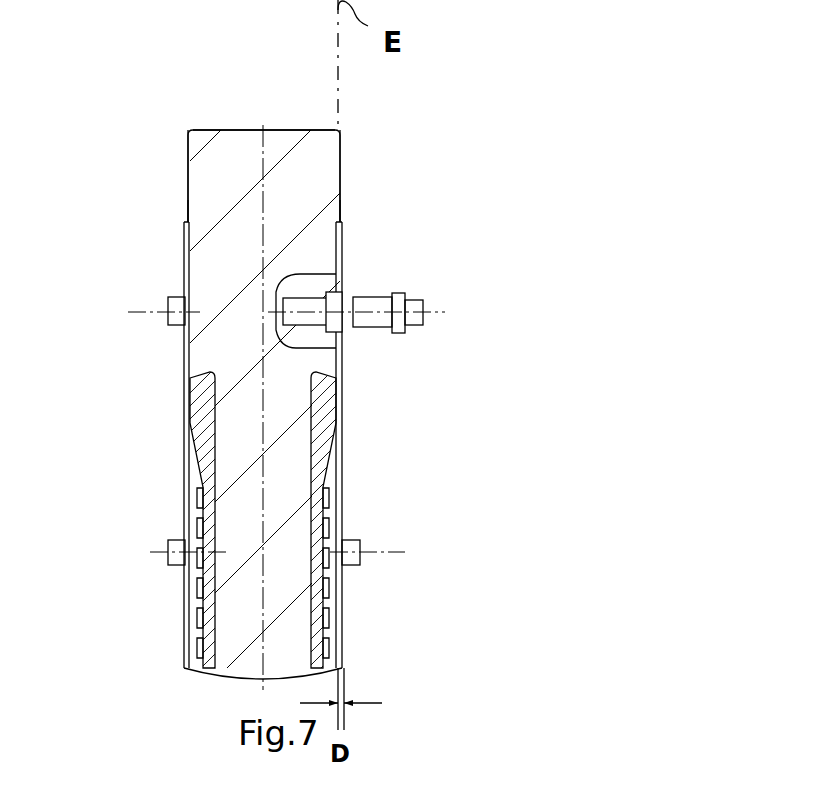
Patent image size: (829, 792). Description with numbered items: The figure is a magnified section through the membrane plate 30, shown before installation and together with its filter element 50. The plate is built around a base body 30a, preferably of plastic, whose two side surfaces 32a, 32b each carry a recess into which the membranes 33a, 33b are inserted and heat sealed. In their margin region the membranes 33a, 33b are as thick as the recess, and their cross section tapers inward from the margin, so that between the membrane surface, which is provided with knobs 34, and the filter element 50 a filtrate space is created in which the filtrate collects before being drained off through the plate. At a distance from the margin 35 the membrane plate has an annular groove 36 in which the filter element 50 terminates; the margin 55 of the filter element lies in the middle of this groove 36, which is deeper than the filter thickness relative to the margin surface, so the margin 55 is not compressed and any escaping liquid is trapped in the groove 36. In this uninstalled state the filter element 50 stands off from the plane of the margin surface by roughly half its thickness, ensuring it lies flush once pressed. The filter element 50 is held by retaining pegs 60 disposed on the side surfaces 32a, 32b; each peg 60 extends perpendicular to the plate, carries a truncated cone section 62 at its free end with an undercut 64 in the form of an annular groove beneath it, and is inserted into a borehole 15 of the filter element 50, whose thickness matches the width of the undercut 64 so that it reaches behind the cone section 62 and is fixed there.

The borehole 15 is at (308, 297).
The membrane plate 30 is at (292, 118).
The base body 30a is at (233, 157).
The side surface 32a is at (187, 157).
The side surface 32b is at (340, 160).
The membrane 33a is at (197, 400).
The membrane 33b is at (330, 400).
The knobs 34 is at (194, 497).
The margin 35 is at (210, 128).
The annular groove 36 is at (186, 219).
The filter element 50 is at (186, 607).
The margin of the filter element 55 is at (184, 231).
The retaining peg 60 is at (168, 300).
The truncated cone section 62 is at (408, 330).
The undercut 64 is at (404, 330).